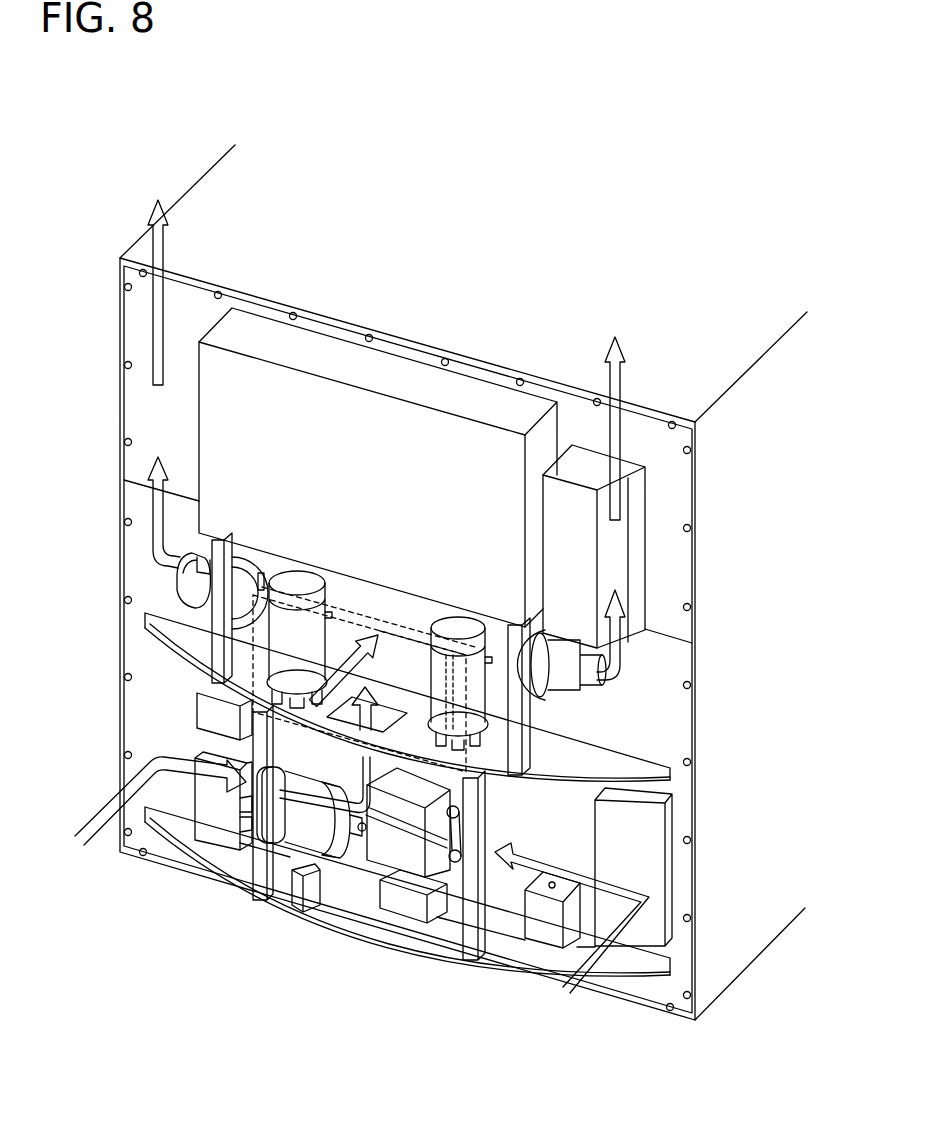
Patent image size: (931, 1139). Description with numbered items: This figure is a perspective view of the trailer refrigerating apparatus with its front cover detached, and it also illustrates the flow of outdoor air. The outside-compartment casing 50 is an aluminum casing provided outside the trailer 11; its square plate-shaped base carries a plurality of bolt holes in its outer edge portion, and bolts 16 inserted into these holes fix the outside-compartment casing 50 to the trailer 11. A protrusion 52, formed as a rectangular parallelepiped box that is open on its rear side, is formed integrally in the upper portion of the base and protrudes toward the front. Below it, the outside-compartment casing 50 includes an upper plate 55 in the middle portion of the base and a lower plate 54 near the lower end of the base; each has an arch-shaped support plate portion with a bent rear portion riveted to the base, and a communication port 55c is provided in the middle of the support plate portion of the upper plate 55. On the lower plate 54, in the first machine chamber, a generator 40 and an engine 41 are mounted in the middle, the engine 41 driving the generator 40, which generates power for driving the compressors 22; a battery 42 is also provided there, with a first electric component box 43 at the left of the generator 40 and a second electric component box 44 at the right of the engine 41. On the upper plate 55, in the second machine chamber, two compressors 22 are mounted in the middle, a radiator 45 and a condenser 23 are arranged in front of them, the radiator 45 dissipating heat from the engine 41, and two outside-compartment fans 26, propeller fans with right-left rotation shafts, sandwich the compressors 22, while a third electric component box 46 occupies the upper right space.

The trailer 11 is at (207, 174).
The bolt 16 is at (362, 337).
The compressor 22 is at (298, 580).
The condenser 23 is at (347, 600).
The outside-compartment fan 26 is at (190, 578).
The generator 40 is at (302, 820).
The engine 41 is at (402, 845).
The battery 42 is at (545, 922).
The first electric component box 43 is at (218, 813).
The second electric component box 44 is at (647, 927).
The radiator 45 is at (390, 602).
The third electric component box 46 is at (611, 562).
The outside-compartment casing 50 is at (110, 343).
The protrusion 52 is at (416, 435).
The lower plate 54 is at (193, 848).
The upper plate 55 is at (150, 638).
The communication port 55c is at (387, 722).